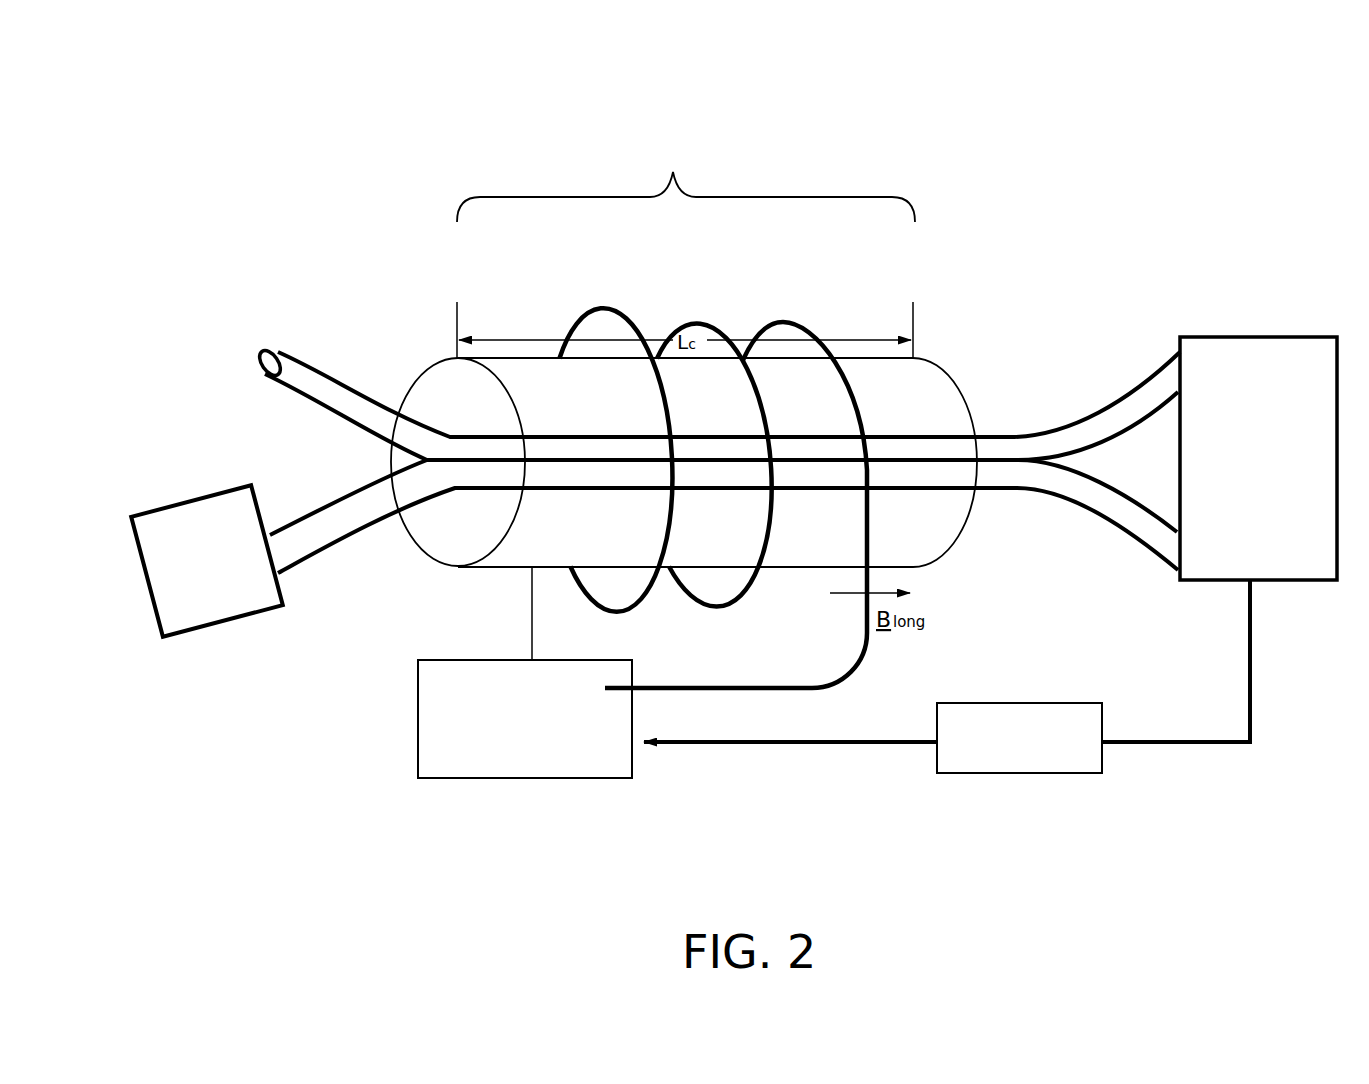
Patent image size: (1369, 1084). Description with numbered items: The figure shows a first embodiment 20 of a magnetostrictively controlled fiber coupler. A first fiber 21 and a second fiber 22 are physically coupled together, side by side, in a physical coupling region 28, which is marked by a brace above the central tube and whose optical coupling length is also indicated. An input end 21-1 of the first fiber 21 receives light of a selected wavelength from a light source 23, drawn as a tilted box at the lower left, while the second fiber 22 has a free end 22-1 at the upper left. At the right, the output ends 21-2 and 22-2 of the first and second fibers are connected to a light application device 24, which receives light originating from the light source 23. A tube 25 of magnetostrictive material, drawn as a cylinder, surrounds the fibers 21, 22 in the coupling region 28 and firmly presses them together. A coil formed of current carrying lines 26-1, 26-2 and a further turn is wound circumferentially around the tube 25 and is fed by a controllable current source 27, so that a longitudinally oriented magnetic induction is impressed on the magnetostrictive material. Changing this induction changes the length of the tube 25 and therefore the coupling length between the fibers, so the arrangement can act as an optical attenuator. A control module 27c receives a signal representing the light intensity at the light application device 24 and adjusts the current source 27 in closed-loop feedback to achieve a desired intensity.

The first embodiment 20 is at (1010, 138).
The first fiber 21 is at (360, 487).
The input end of the first fiber 21-1 is at (282, 574).
The output end of the first fiber 21-2 is at (1127, 532).
The second fiber 22 is at (358, 422).
The end of the second fiber 22-1 is at (258, 352).
The output end of the second fiber 22-2 is at (1168, 346).
The light source 23 is at (223, 610).
The light application device 24 is at (1218, 355).
The tube 25 is at (515, 370).
The current carrying line 26-1 is at (607, 307).
The current carrying line 26-2 is at (690, 317).
The current source 27 is at (508, 780).
The control module 27c is at (1017, 773).
The physical coupling region 28 is at (686, 414).